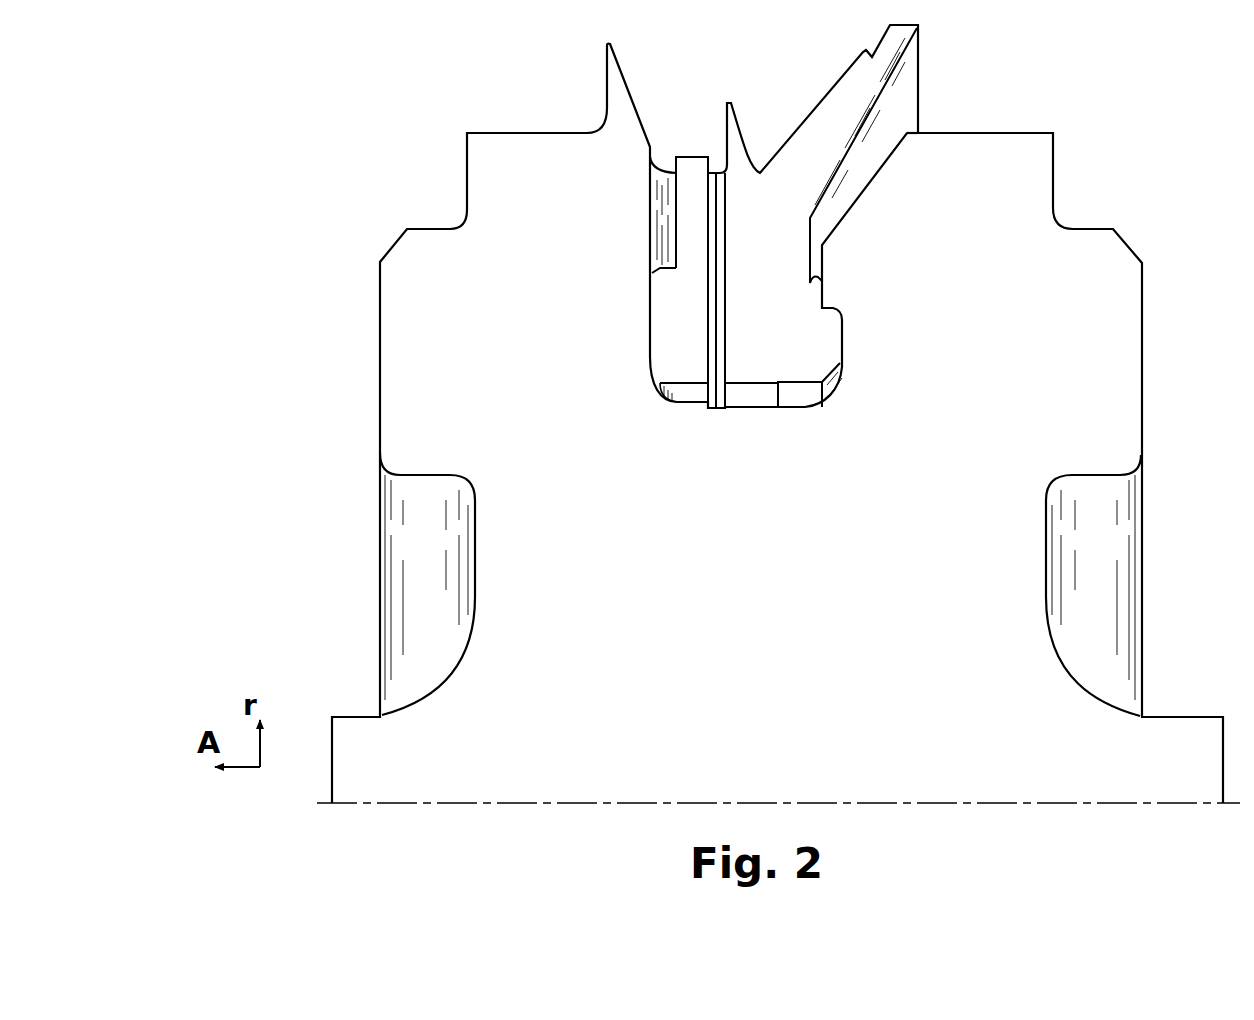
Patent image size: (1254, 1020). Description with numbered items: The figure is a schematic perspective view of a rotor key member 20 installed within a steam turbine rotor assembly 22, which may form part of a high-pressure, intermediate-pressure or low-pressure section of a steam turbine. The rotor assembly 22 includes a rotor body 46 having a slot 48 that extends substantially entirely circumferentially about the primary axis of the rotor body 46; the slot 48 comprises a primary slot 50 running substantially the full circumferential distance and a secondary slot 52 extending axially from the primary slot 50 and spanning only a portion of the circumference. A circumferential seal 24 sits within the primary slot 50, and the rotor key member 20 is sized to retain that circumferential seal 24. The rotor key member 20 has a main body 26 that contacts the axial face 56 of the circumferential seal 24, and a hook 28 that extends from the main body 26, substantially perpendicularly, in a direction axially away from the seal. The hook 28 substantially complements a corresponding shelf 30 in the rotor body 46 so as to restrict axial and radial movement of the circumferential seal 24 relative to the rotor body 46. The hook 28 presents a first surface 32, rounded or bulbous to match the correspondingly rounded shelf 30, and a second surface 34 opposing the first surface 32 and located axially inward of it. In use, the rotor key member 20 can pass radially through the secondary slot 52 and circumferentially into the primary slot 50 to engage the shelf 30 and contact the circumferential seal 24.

The steam turbine rotor assembly 22 is at (348, 106).
The circumferential seal 24 is at (770, 318).
The main body 26 is at (693, 172).
The hook 28 is at (658, 323).
The shelf 30 is at (645, 266).
The first surface 32 is at (673, 268).
The second surface 34 is at (645, 381).
The rotor key member 20 is at (702, 338).
The rotor body 46 is at (585, 560).
The slot 48 is at (731, 440).
The primary slot 50 is at (800, 424).
The secondary slot 52 is at (661, 423).
The axial face 56 is at (718, 216).